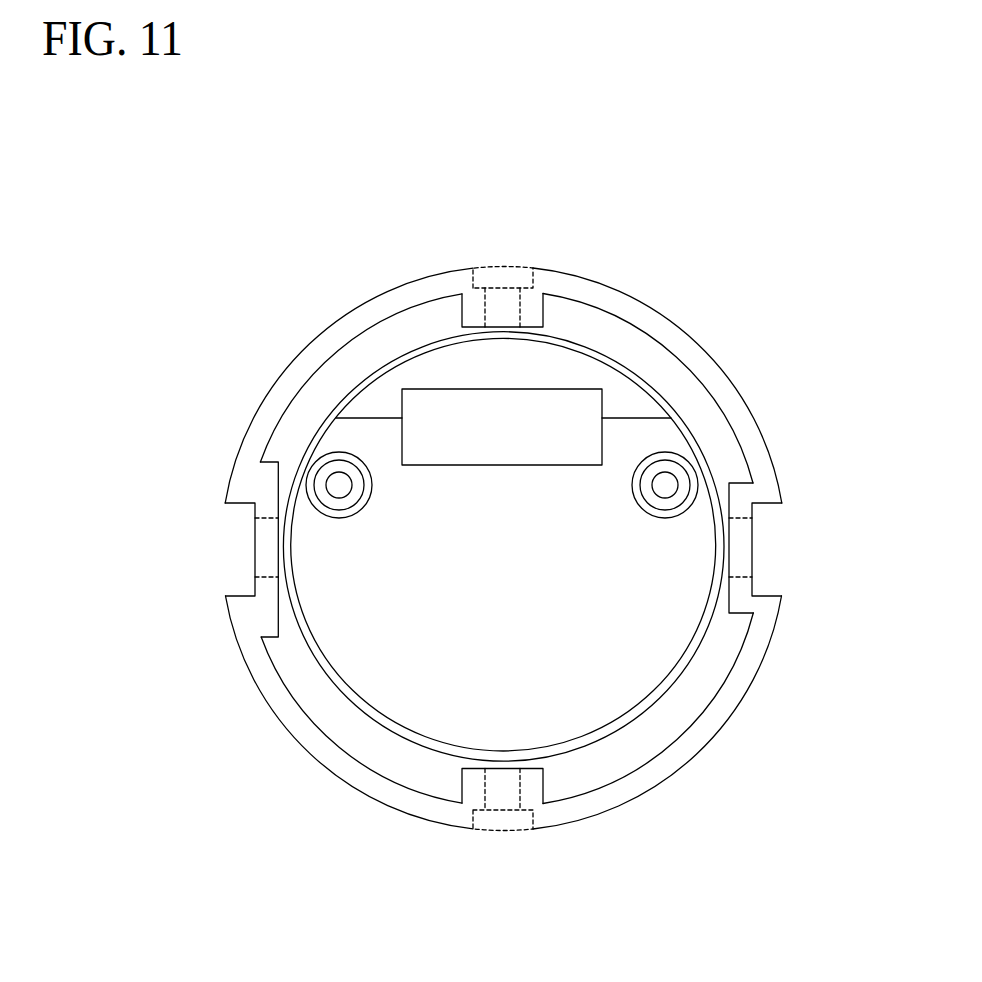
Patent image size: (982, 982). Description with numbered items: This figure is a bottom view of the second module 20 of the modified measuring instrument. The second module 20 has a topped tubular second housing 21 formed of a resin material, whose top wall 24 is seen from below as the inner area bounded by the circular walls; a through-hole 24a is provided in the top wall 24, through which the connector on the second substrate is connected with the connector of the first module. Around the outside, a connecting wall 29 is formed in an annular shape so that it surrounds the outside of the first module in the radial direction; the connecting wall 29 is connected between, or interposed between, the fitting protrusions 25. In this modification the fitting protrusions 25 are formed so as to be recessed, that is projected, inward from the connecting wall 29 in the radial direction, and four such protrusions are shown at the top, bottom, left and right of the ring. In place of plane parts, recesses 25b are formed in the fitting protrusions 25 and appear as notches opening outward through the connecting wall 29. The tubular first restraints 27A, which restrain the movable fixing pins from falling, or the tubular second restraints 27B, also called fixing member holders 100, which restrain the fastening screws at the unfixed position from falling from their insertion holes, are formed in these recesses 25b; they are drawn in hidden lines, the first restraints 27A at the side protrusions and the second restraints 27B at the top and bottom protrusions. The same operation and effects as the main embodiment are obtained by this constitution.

The second module 20 is at (382, 285).
The second housing 21 is at (510, 565).
The top wall 24 is at (658, 445).
The through-hole 24a is at (600, 438).
The fitting protrusion 25 is at (547, 312).
The recess 25b is at (528, 268).
The first restraint 27A is at (743, 580).
The second restraint 27B is at (480, 569).
The fixing member holder 100 is at (480, 307).
The connecting wall 29 is at (685, 333).